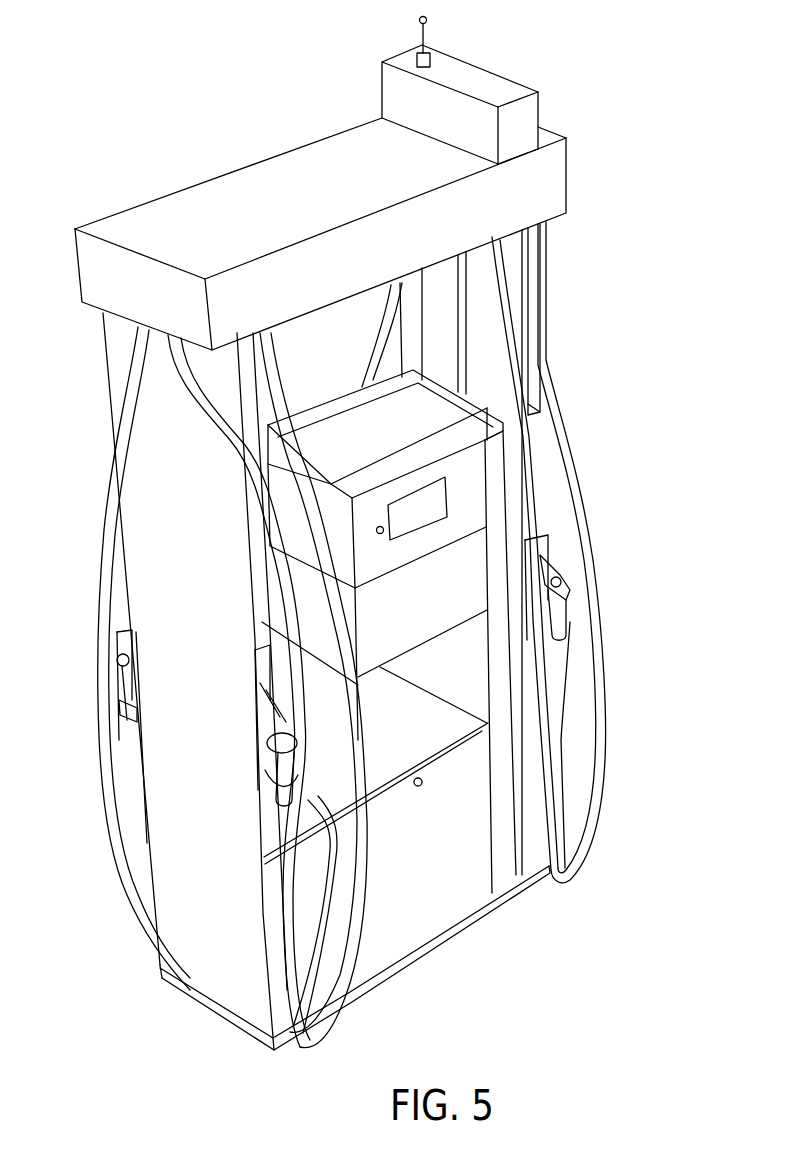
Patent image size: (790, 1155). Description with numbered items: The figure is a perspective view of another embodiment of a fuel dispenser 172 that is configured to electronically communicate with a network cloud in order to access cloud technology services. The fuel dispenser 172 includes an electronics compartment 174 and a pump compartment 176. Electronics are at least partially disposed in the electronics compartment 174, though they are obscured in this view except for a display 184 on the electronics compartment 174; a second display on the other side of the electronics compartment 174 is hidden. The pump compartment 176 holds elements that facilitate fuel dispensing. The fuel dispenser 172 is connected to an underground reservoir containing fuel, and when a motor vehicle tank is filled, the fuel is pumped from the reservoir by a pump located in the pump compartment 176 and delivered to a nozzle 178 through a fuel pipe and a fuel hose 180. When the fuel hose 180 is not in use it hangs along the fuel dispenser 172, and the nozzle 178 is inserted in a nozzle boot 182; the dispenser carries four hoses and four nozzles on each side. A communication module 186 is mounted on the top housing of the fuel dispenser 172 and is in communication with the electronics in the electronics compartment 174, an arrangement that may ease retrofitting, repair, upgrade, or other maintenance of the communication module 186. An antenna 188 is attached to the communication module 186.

The fuel dispenser 172 is at (588, 256).
The electronics compartment 174 is at (338, 418).
The pump compartment 176 is at (433, 928).
The nozzle 178 is at (570, 583).
The fuel hose 180 is at (567, 427).
The nozzle boot 182 is at (547, 513).
The display 184 is at (440, 502).
The communication module 186 is at (523, 83).
The antenna 188 is at (432, 58).